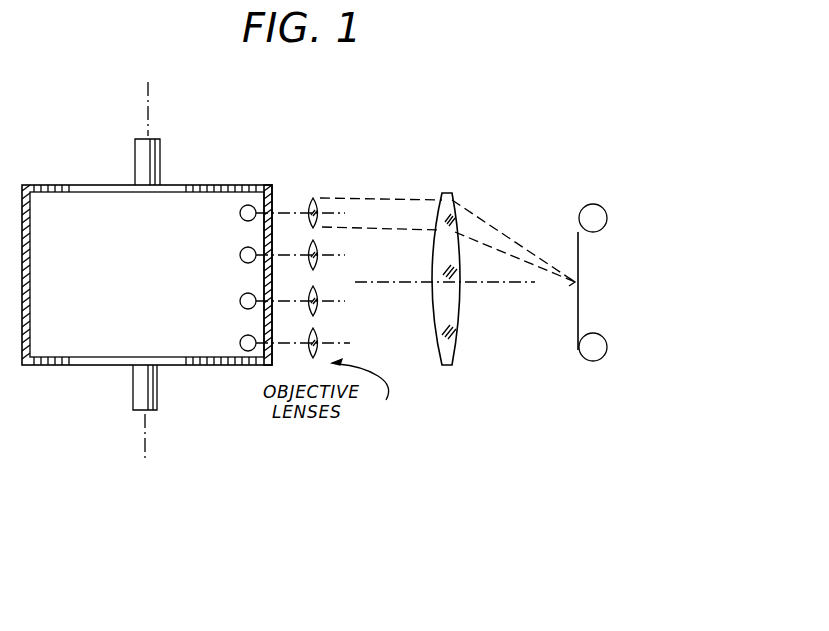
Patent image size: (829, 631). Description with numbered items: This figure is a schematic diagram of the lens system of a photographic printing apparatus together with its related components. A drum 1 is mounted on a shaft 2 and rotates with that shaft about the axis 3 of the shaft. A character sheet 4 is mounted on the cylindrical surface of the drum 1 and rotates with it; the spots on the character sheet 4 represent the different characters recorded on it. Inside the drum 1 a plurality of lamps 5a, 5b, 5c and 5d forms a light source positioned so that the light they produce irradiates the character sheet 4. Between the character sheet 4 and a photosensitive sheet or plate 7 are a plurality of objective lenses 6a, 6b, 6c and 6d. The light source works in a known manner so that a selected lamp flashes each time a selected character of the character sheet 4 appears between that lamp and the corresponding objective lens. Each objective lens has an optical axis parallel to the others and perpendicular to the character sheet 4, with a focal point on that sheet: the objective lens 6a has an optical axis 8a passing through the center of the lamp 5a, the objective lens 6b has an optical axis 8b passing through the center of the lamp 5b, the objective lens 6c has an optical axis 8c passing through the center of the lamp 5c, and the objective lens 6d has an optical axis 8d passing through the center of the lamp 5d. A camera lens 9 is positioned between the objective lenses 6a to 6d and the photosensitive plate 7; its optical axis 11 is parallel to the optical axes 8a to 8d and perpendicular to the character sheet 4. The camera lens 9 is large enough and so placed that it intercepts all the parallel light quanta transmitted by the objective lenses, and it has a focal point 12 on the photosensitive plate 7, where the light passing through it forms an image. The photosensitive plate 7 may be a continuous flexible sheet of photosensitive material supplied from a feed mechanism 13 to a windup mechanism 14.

The drum 1 is at (184, 200).
The shaft 2 is at (140, 159).
The axis 3 is at (150, 100).
The character sheet 4 is at (272, 186).
The lamp 5a is at (240, 218).
The lamp 5b is at (240, 259).
The lamp 5c is at (240, 302).
The lamp 5d is at (240, 345).
The objective lens 6a is at (308, 219).
The objective lens 6b is at (308, 261).
The objective lens 6c is at (308, 307).
The objective lens 6d is at (308, 349).
The photosensitive plate 7 is at (578, 237).
The optical axis 8a is at (376, 206).
The optical axis 8b is at (364, 249).
The optical axis 8c is at (367, 295).
The optical axis 8d is at (371, 338).
The camera lens 9 is at (443, 358).
The optical axis 11 is at (516, 285).
The focal point 12 is at (572, 288).
The feed mechanism 13 is at (603, 350).
The windup mechanism 14 is at (606, 219).